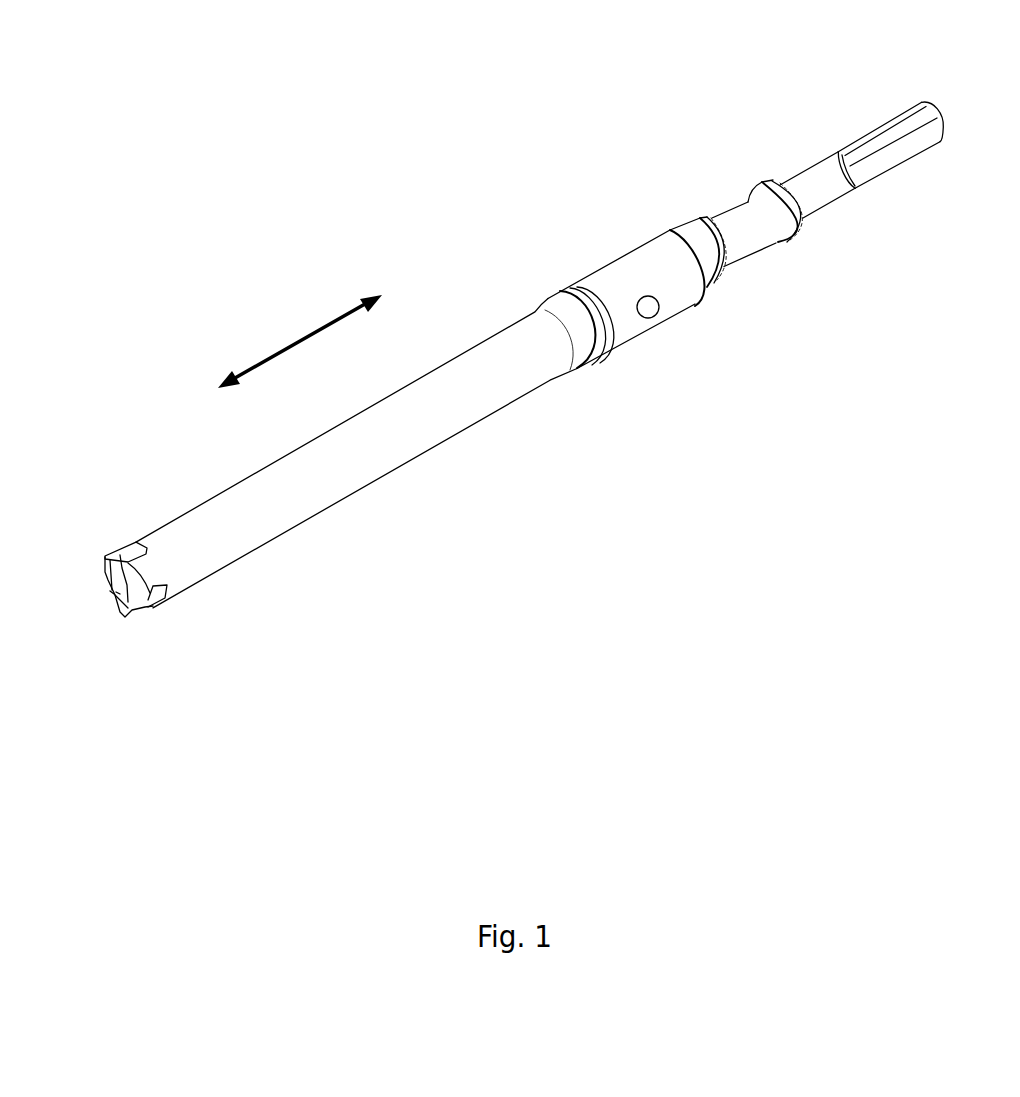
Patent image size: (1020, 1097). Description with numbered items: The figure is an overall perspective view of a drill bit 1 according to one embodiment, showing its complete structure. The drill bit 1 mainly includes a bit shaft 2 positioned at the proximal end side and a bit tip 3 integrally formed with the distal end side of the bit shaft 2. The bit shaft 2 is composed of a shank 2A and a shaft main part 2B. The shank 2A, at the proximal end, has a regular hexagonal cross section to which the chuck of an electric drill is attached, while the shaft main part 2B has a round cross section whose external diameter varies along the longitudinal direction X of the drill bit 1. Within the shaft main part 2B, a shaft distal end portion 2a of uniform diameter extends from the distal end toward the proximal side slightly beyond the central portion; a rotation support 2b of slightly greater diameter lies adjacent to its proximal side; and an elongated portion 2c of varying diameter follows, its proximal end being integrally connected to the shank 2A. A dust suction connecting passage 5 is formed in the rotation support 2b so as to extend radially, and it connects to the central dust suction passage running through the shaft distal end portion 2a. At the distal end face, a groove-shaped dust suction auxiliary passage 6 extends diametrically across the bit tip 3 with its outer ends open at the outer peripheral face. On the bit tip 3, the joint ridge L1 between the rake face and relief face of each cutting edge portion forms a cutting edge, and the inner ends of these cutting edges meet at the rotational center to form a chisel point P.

The drill bit 1 is at (453, 284).
The bit shaft 2 is at (285, 518).
The shaft distal end portion 2a is at (470, 415).
The rotation support 2b is at (630, 335).
The shaft main part 2B is at (618, 265).
The elongated portion 2c is at (757, 240).
The shank 2A is at (880, 137).
The bit tip 3 is at (112, 580).
The dust suction connecting passage 5 is at (655, 315).
The dust suction auxiliary passage 6 is at (119, 556).
The chisel point P is at (112, 592).
The joint ridge L1 is at (118, 594).
The longitudinal direction X is at (297, 340).